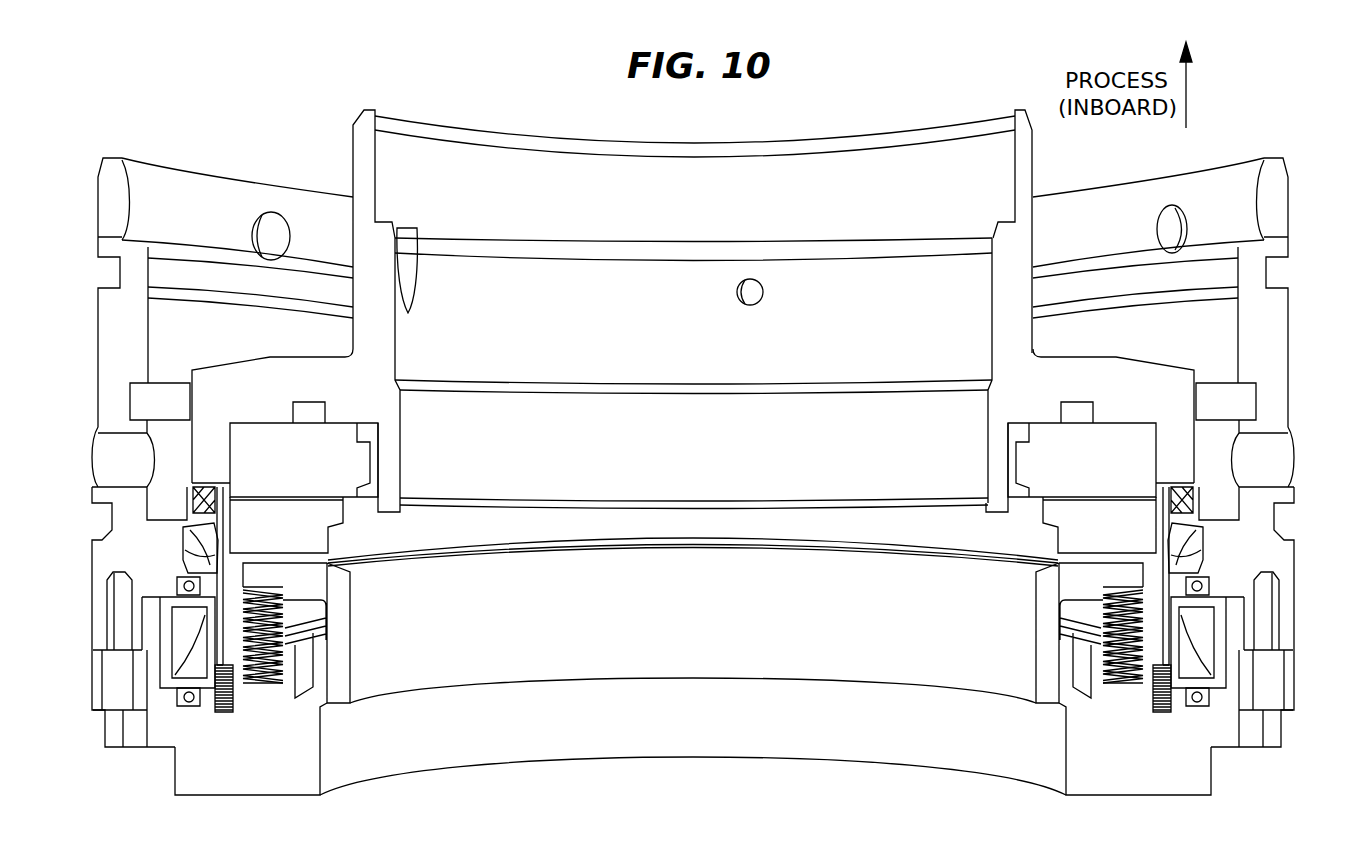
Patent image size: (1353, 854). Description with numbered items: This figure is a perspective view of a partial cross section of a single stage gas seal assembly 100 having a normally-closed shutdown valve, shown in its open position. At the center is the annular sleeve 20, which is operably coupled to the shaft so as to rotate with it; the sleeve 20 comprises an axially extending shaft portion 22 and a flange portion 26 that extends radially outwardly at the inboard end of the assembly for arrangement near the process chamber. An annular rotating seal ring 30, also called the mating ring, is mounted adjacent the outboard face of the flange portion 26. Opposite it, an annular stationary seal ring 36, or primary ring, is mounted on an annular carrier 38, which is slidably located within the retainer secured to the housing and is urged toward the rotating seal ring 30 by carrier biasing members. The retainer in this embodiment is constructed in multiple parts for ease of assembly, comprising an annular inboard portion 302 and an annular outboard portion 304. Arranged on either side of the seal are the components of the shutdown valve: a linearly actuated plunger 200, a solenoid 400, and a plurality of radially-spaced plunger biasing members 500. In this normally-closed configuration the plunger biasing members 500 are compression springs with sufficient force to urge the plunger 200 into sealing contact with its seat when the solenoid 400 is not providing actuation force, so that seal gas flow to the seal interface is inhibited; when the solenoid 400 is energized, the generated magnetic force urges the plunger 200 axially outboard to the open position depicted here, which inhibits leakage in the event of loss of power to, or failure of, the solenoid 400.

The seal assembly 100 is at (214, 117).
The annular sleeve 20 is at (381, 393).
The shaft portion 22 is at (386, 301).
The flange portion 26 is at (266, 395).
The rotating seal ring 30 is at (272, 460).
The stationary seal ring 36 is at (292, 532).
The carrier 38 is at (329, 594).
The plunger 200 is at (192, 463).
The inboard portion 302 is at (157, 560).
The outboard portion 304 is at (261, 780).
The solenoid 400 is at (183, 642).
The plunger biasing members 500 is at (228, 712).